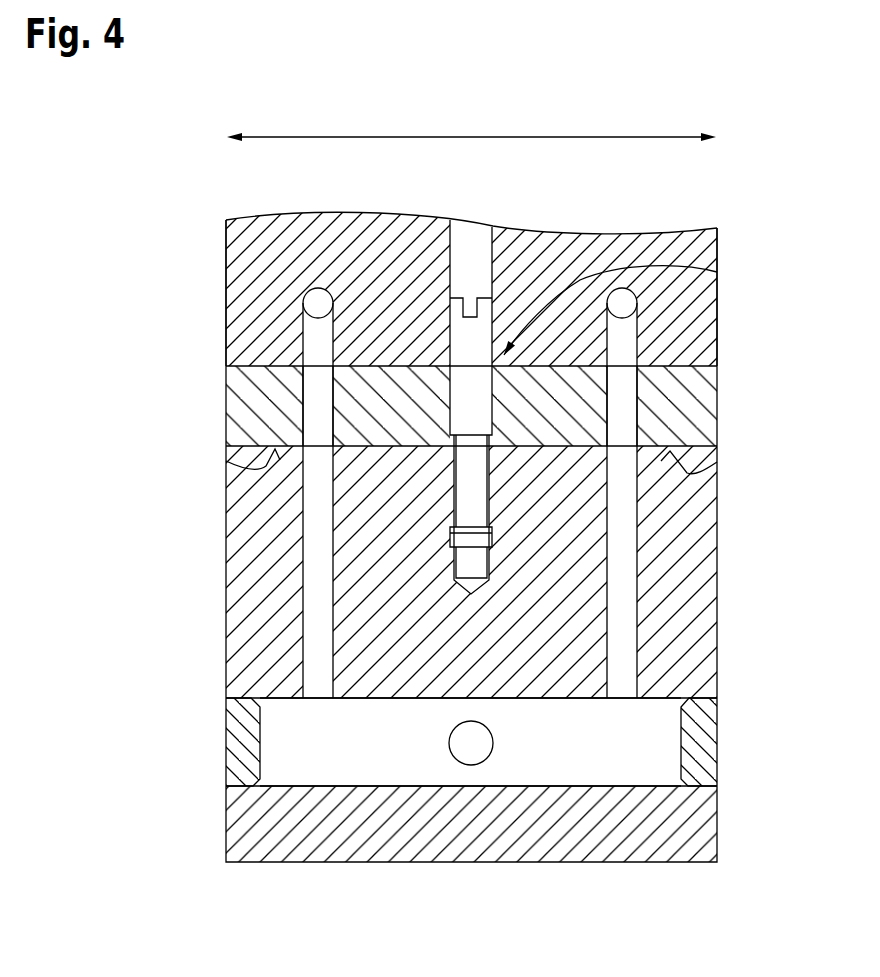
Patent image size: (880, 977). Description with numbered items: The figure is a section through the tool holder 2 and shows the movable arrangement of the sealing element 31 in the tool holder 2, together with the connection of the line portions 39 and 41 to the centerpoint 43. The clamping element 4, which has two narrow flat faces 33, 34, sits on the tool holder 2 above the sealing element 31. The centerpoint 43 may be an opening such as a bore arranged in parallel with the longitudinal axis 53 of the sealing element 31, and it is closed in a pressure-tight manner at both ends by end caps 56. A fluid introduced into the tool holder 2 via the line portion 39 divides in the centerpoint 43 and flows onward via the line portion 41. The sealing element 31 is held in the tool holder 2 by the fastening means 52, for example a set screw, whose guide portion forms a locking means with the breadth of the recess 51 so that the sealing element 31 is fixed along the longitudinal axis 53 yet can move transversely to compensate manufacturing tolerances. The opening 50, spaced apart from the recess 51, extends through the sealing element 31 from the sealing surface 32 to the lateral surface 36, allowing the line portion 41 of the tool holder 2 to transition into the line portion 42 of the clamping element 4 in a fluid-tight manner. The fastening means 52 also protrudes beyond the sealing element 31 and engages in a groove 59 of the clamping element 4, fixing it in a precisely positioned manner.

The tool holder 2 is at (697, 497).
The clamping element 4 is at (550, 346).
The sealing element 31 is at (672, 413).
The sealing surface 32 is at (387, 366).
The narrow flat face 33 is at (207, 304).
The narrow flat face 34 is at (736, 317).
The lateral surface 36 is at (226, 461).
The line portion 39 is at (471, 750).
The line portion 41 is at (312, 577).
The line portion 42 is at (312, 333).
The centerpoint 43 is at (633, 748).
The opening 50 is at (312, 383).
The recess 51 is at (717, 272).
The fastening means 52 is at (468, 326).
The longitudinal axis 53 is at (470, 135).
The end cap 56 is at (250, 738).
The groove 59 is at (471, 245).